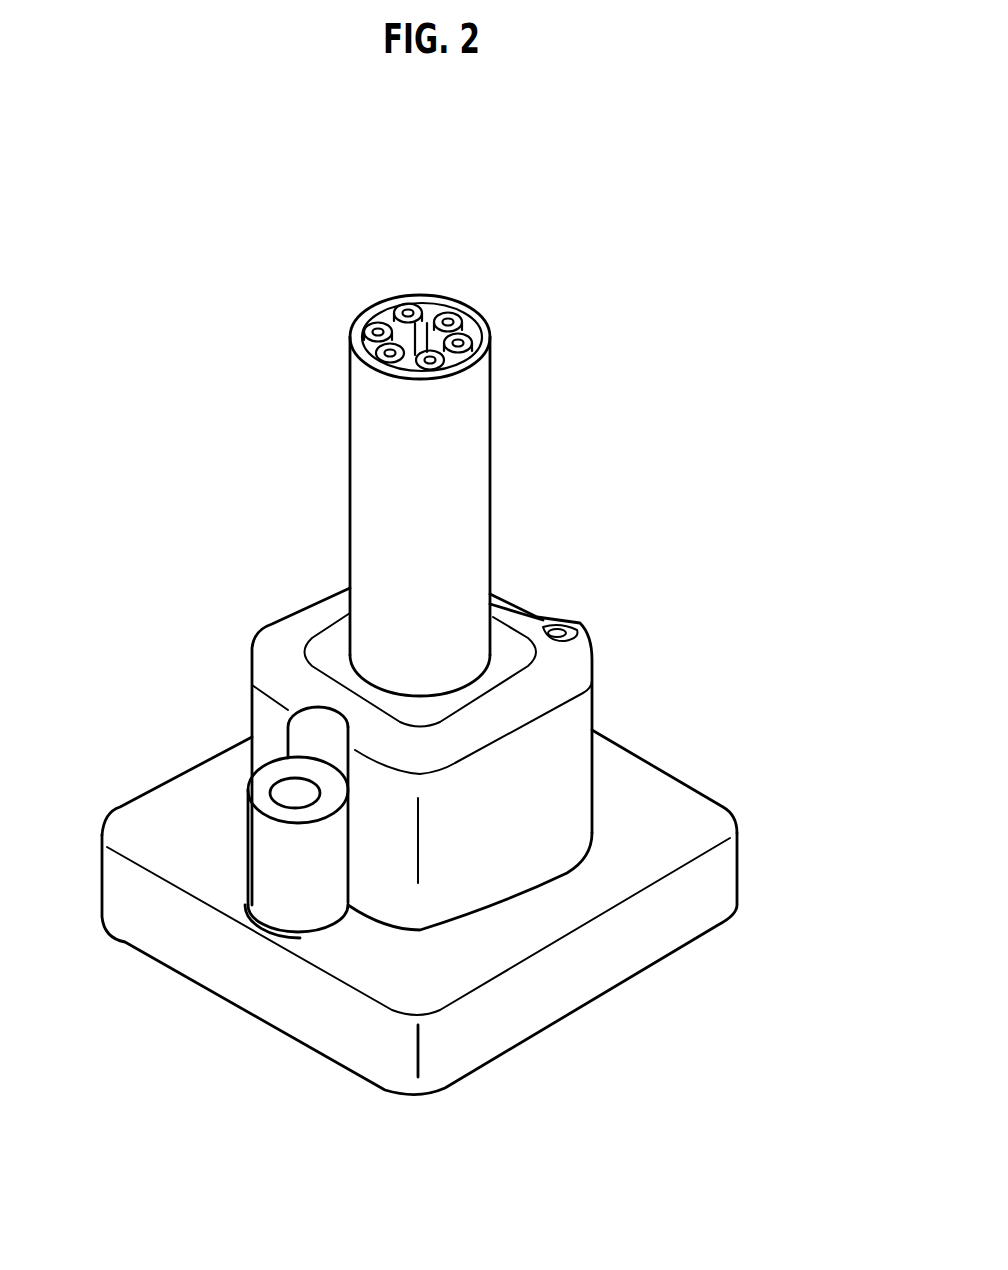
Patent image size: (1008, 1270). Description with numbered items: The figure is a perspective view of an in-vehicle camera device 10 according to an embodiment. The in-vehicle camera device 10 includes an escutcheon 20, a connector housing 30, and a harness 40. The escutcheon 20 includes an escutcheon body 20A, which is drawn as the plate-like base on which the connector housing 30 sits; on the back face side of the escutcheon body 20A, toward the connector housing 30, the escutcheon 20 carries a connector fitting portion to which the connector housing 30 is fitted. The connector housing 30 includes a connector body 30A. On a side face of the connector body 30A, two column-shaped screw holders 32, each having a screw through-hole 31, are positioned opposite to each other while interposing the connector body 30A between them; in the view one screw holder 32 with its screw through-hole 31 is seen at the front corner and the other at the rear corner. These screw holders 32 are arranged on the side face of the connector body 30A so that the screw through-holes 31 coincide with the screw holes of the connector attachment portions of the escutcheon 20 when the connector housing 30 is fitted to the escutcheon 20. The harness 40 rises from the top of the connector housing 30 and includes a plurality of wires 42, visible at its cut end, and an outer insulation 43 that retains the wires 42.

The in-vehicle camera device 10 is at (217, 337).
The escutcheon 20 is at (600, 1016).
The escutcheon body 20A is at (690, 827).
The connector housing 30 is at (607, 713).
The connector body 30A is at (577, 777).
The screw through-hole 31 is at (283, 793).
The screw holder 32 is at (268, 873).
The harness 40 is at (500, 482).
The wire 42 is at (423, 307).
The outer insulation 43 is at (357, 458).